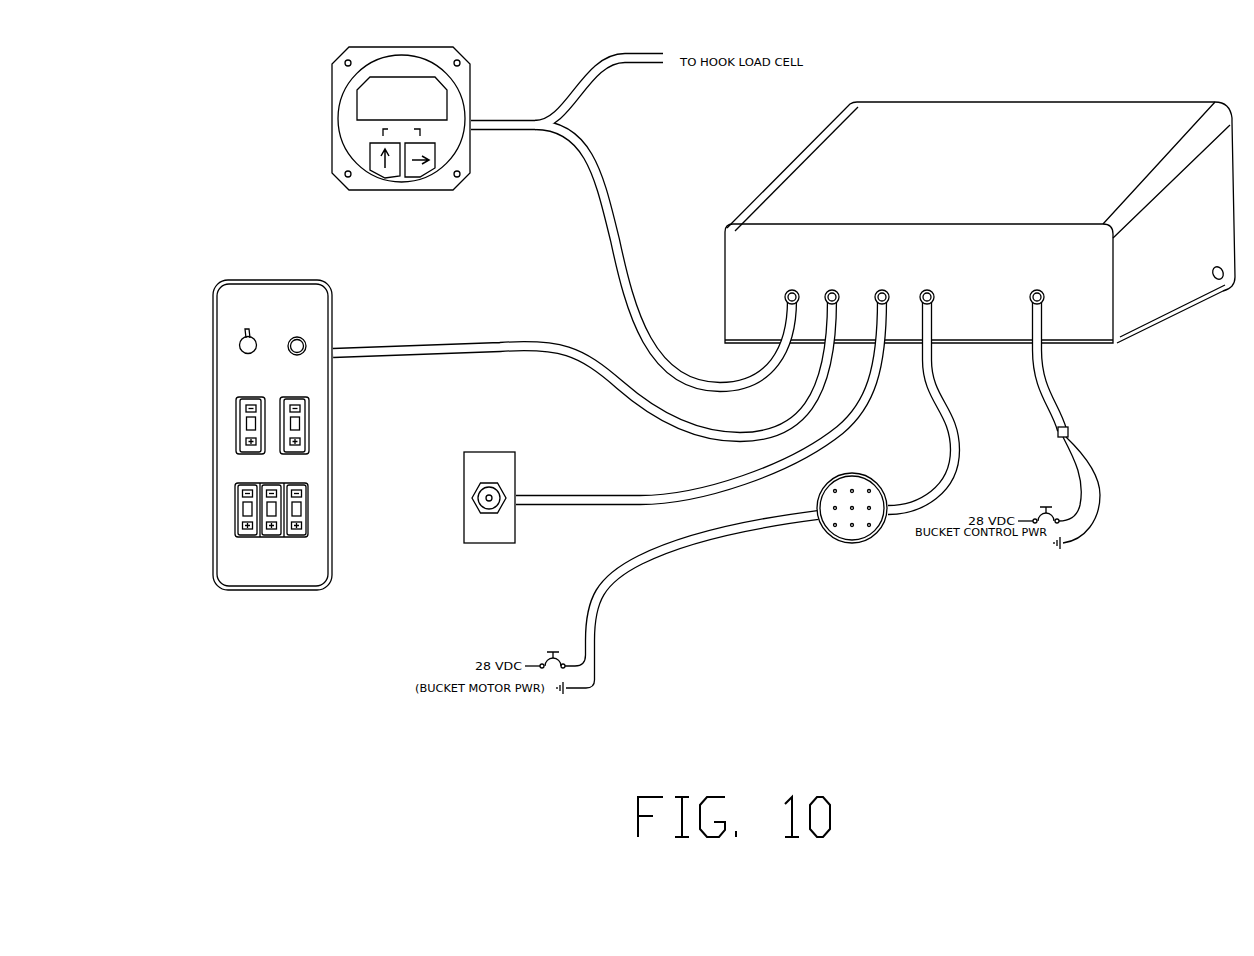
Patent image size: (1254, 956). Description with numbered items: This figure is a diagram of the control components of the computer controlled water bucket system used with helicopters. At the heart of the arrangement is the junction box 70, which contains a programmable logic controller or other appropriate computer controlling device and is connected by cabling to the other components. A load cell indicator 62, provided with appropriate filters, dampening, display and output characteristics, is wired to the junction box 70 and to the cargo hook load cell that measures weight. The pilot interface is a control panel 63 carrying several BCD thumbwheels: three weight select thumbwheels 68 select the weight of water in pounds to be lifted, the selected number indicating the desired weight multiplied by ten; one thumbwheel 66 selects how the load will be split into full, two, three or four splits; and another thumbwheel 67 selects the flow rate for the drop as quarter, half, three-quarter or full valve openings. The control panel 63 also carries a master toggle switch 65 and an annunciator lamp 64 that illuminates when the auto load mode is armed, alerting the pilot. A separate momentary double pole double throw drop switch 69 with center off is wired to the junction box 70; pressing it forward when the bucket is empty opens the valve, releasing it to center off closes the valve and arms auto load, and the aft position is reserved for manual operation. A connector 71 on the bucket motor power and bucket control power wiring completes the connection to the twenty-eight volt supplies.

The load cell indicator 62 is at (341, 82).
The control panel 63 is at (262, 568).
The annunciator lamp 64 is at (314, 341).
The auto control master toggle switch 65 is at (237, 342).
The split select thumbwheel 66 is at (232, 428).
The flow rate select thumbwheel 67 is at (311, 423).
The weight select thumbwheels 68 is at (233, 510).
The drop switch 69 is at (470, 479).
The junction box 70 is at (1034, 181).
The bucket connector 71 is at (864, 545).